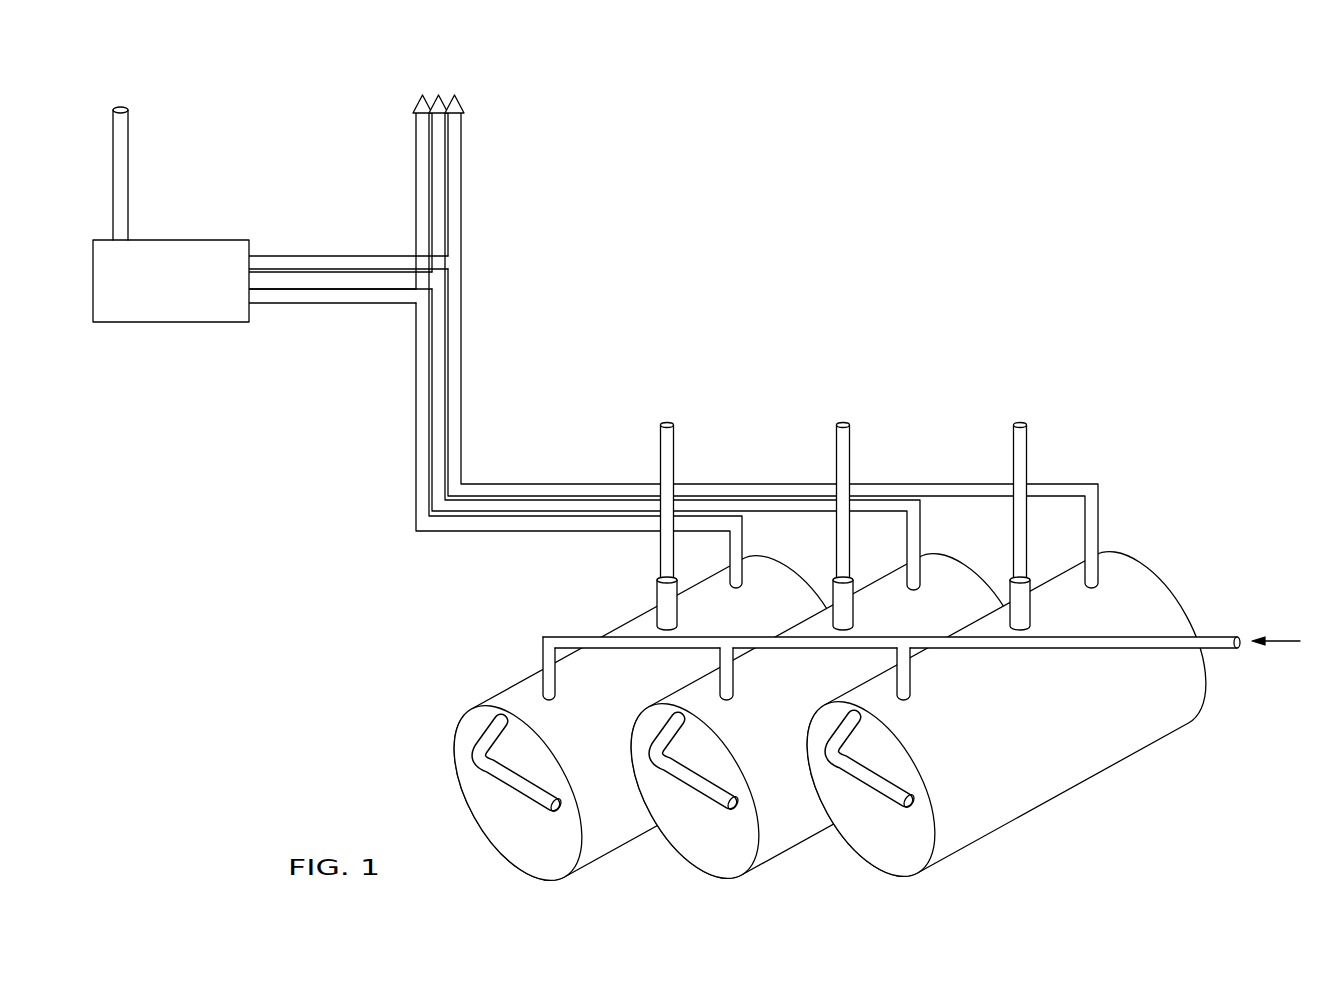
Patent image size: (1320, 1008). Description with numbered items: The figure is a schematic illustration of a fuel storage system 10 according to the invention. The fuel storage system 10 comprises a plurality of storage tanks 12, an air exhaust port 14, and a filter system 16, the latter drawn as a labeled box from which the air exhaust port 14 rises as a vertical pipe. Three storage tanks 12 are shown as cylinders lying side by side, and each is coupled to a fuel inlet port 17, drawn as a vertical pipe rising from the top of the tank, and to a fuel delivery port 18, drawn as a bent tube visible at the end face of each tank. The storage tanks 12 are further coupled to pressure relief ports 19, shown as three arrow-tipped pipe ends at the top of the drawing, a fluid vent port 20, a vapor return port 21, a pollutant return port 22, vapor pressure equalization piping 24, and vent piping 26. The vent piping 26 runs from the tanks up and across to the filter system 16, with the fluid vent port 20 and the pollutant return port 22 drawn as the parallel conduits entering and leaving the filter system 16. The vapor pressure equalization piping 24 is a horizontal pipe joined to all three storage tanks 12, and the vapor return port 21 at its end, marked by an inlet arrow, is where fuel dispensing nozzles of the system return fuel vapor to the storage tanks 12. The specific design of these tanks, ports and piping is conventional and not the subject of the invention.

The fuel storage system 10 is at (1027, 247).
The storage tanks 12 is at (607, 848).
The air exhaust port 14 is at (129, 117).
The filter system 16 is at (224, 240).
The fuel inlet ports 17 is at (676, 432).
The fuel delivery ports 18 is at (518, 787).
The pressure relief ports 19 is at (484, 101).
The fluid vent port 20 is at (368, 256).
The vapor return port 21 is at (1220, 636).
The pollutant return port 22 is at (373, 303).
The vapor pressure equalization piping 24 is at (543, 641).
The vent piping 26 is at (527, 432).